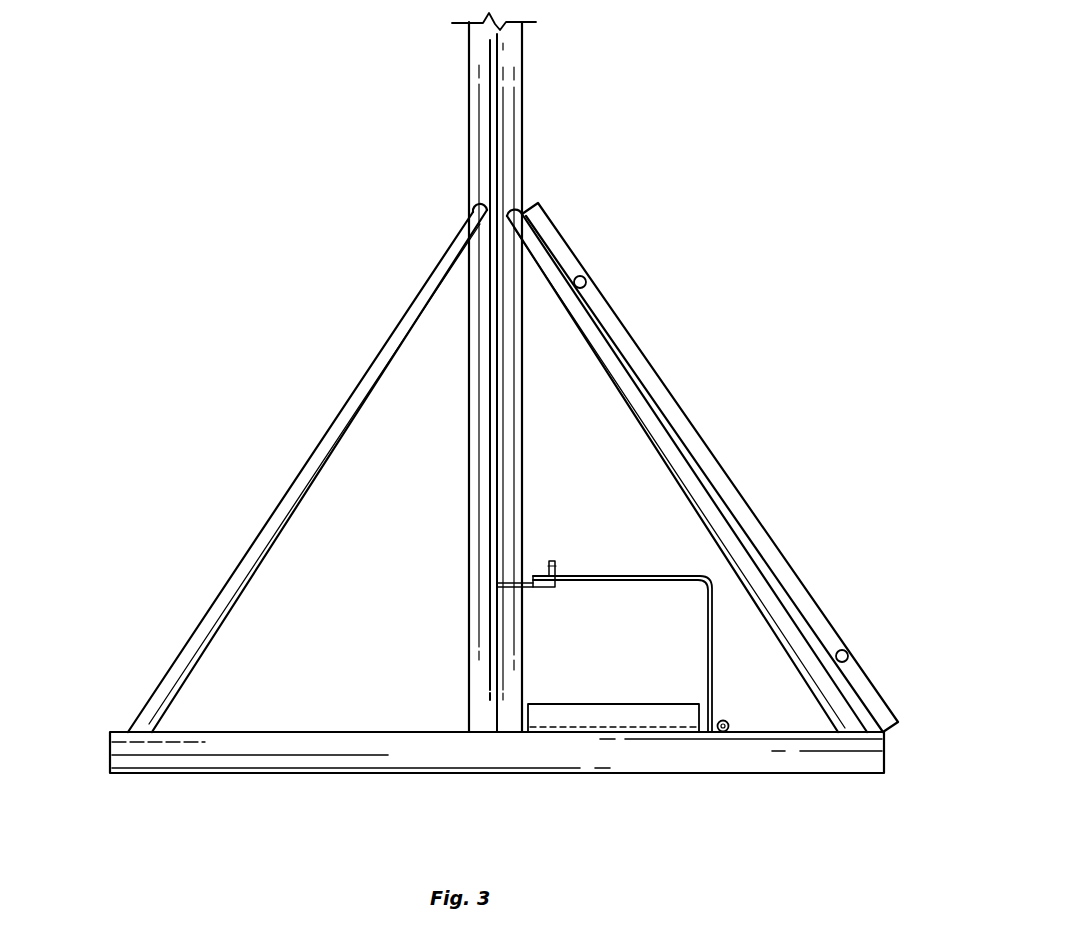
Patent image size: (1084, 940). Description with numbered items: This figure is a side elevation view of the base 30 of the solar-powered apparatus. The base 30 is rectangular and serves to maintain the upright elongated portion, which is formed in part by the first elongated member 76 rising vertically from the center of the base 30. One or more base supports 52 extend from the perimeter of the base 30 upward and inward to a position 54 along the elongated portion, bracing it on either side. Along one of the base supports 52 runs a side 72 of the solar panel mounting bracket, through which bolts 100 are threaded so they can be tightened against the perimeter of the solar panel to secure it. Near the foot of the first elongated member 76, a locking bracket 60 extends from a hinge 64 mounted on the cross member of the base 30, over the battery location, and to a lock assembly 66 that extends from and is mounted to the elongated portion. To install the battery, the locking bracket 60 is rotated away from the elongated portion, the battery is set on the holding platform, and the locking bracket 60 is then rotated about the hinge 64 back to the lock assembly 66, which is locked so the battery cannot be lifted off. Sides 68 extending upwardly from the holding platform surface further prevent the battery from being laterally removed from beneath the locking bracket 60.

The base 30 is at (626, 762).
The base support 52 is at (655, 442).
The position along the elongated portion 54 is at (463, 207).
The locking bracket 60 is at (637, 578).
The hinge 64 is at (730, 720).
The lock assembly 66 is at (556, 562).
The sides 68 is at (585, 703).
The sides of the solar panel mounting bracket 72 is at (708, 447).
The first elongated member 76 is at (518, 115).
The bolt 100 is at (586, 277).